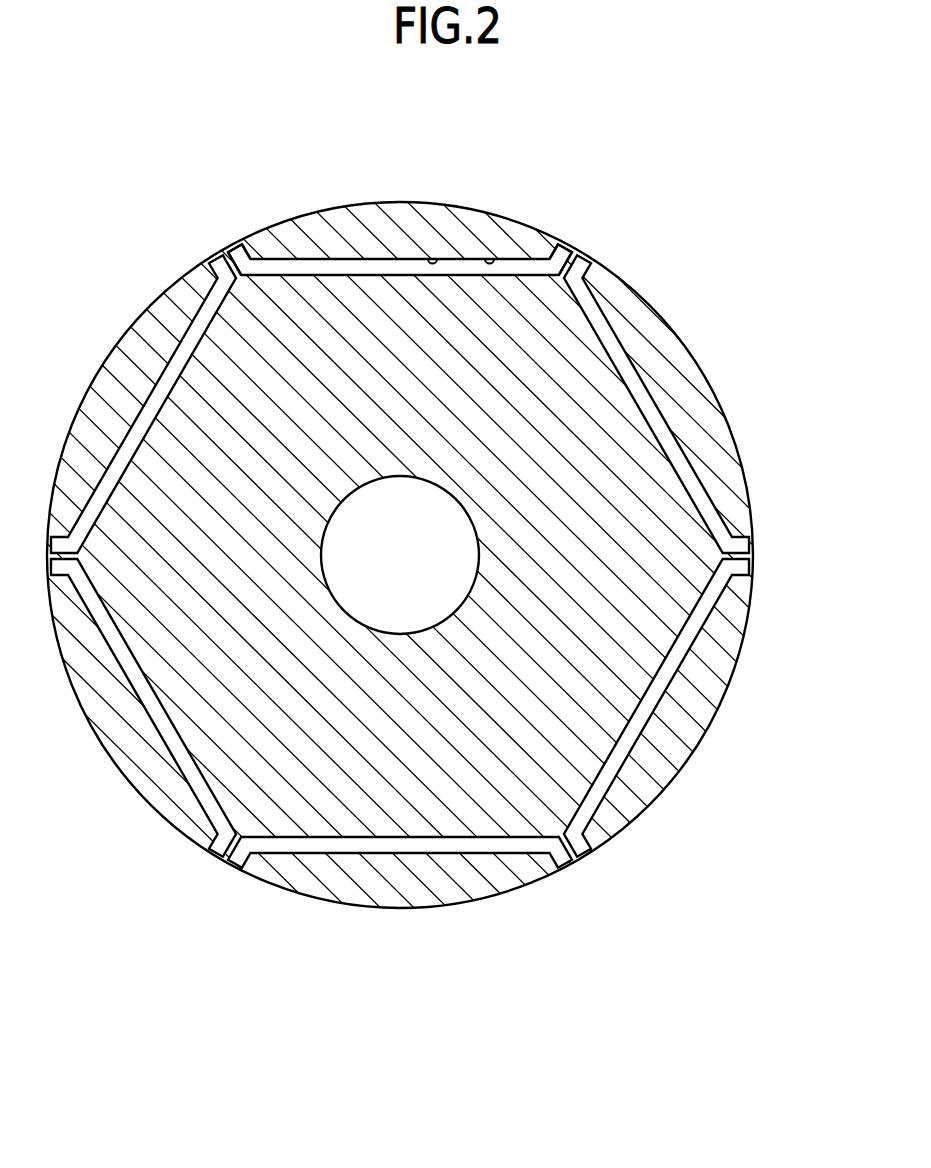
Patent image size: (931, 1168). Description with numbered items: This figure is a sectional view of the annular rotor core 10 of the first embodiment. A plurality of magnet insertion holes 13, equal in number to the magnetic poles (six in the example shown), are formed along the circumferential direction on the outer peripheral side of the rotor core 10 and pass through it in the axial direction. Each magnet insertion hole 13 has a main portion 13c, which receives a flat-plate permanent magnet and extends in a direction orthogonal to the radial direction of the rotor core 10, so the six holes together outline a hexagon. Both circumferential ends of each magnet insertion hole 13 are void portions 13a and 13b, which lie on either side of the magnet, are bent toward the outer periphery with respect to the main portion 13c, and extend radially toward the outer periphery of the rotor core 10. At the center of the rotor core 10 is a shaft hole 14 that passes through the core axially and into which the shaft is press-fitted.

The rotor core 10 is at (692, 685).
The magnet insertion hole 13 is at (433, 258).
The void portion 13a is at (255, 255).
The void portion 13b is at (577, 264).
The main portion 13c is at (490, 258).
The shaft hole 14 is at (386, 620).